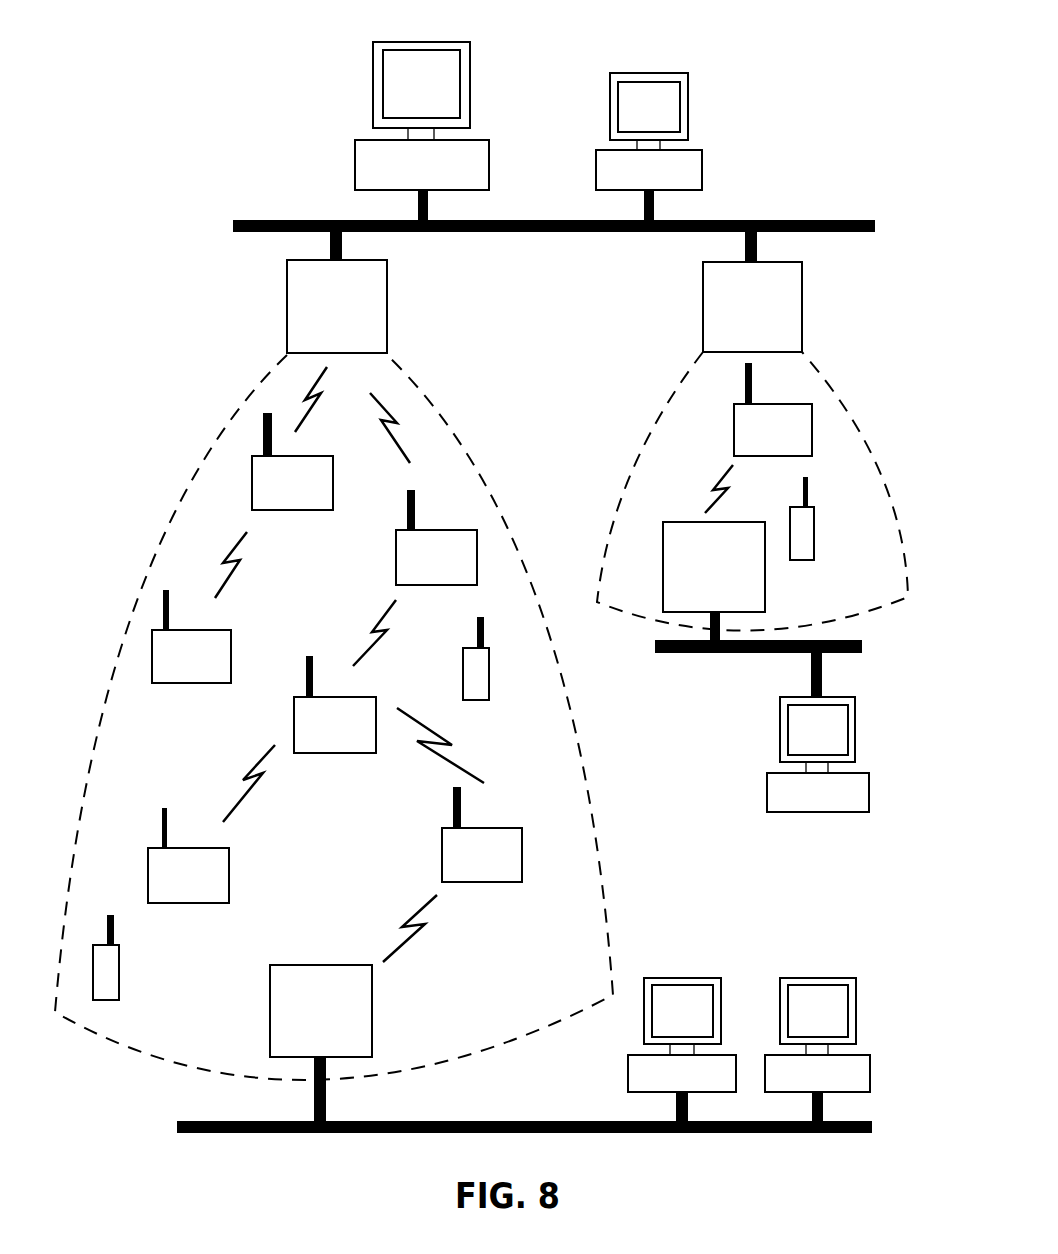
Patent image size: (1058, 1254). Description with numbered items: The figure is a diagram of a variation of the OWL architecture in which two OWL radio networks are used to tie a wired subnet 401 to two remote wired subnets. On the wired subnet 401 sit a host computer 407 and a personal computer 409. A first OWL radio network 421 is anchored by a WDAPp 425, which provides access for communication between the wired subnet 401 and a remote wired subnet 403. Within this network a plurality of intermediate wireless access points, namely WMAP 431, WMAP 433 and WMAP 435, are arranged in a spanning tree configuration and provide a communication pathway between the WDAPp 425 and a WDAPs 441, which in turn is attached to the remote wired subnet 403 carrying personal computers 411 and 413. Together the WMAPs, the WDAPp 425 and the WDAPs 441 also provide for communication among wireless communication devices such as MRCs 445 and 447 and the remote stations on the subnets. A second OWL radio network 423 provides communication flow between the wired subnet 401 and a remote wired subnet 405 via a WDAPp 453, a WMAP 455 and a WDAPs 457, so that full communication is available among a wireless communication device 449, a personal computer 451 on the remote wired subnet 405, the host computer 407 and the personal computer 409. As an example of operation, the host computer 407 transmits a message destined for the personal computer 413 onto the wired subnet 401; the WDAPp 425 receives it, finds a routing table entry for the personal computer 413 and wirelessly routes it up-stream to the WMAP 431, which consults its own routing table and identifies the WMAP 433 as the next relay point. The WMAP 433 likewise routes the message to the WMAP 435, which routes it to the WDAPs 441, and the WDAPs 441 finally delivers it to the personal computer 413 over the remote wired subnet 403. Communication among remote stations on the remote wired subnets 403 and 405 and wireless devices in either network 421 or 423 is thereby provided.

The wired subnet 401 is at (275, 220).
The remote wired subnet 403 is at (300, 1135).
The remote wired subnet 405 is at (678, 652).
The host computer 407 is at (470, 93).
The personal computer 409 is at (688, 108).
The personal computer 411 is at (678, 978).
The personal computer 413 is at (805, 978).
The OWL radio network 421 is at (180, 487).
The second OWL radio network 423 is at (633, 438).
The WDAPp 425 is at (287, 315).
The WMAP 431 is at (396, 578).
The WMAP 433 is at (294, 717).
The WMAP 435 is at (522, 867).
The WDAPs 441 is at (372, 1017).
The MRC 445 is at (489, 680).
The MRC 447 is at (119, 970).
The wireless communication device 449 is at (814, 543).
The personal computer 451 is at (855, 720).
The WDAPp 453 is at (703, 310).
The WMAP 455 is at (734, 435).
The WDAPs 457 is at (663, 585).